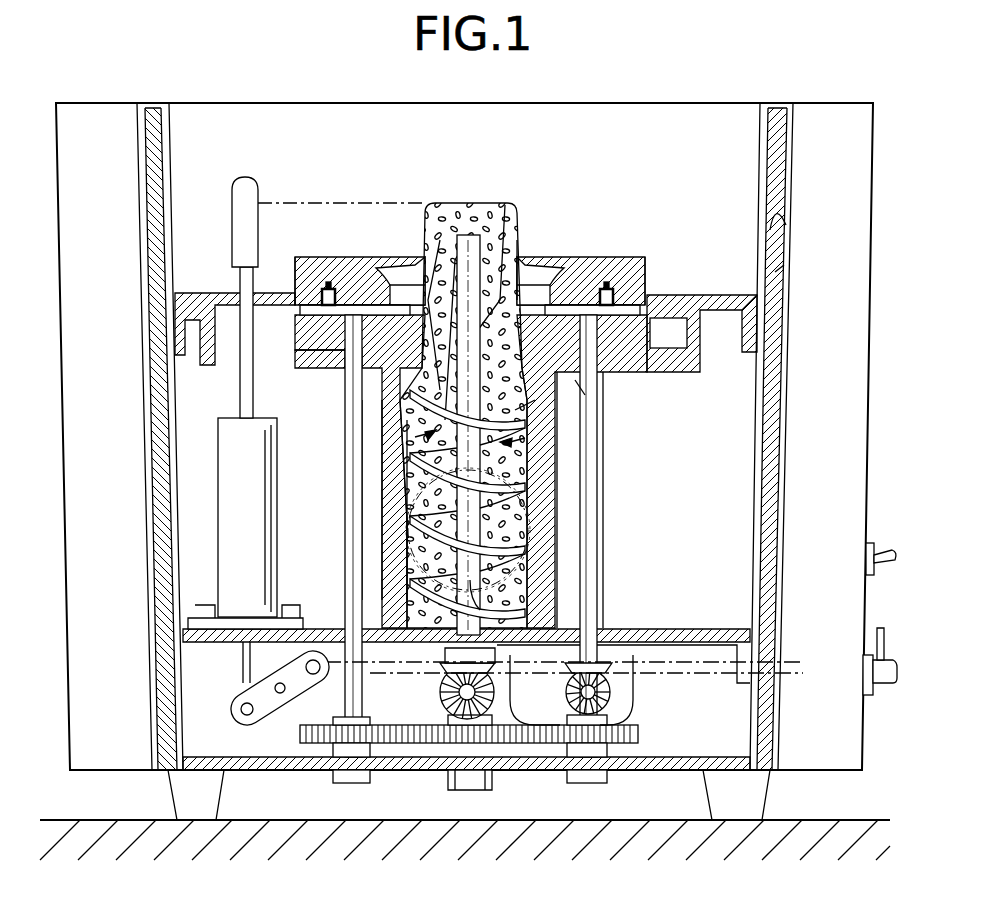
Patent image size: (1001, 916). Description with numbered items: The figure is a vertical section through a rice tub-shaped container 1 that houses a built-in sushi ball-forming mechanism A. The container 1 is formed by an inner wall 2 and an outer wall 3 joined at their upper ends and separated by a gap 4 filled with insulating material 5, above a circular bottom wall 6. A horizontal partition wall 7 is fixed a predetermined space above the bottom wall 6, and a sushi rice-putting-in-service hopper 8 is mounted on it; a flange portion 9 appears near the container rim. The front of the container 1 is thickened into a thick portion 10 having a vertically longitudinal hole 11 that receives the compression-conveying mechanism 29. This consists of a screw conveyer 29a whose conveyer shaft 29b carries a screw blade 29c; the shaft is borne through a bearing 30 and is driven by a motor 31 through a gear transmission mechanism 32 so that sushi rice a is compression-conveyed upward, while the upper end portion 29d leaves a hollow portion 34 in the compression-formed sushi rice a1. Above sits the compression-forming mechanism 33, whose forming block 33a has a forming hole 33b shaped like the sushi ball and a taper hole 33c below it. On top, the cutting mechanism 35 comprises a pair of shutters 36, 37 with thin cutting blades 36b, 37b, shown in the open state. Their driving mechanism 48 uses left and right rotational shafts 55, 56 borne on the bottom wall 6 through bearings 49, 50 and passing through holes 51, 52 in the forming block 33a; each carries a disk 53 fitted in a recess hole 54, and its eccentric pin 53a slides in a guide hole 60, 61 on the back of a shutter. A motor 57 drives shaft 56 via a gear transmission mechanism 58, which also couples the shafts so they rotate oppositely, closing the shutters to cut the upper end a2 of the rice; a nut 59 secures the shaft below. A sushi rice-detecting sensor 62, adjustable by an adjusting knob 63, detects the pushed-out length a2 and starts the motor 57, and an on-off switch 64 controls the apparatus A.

The rice tub-shaped container 1 is at (873, 148).
The inner wall 2 is at (760, 143).
The outer wall 3 is at (793, 165).
The gap 4 is at (786, 224).
The insulating material 5 is at (784, 266).
The bottom wall 6 is at (690, 770).
The horizontal partition wall 7 is at (695, 630).
The sushi rice-putting-in-service hopper 8 is at (703, 296).
The flange 9 is at (745, 302).
The thick portion 10 is at (382, 515).
The vertically longitudinal hole 11 is at (395, 540).
The compression-conveying mechanism 29 is at (415, 470).
The screw conveyer 29a is at (530, 440).
The conveyer shaft 29b is at (480, 578).
The screw blade 29c is at (415, 437).
The upper end portion of the conveyer shaft 29d is at (535, 410).
The bearing 30 is at (455, 662).
The motor 31 is at (530, 745).
The gear transmission mechanism 32 is at (433, 740).
The compression-forming mechanism 33 is at (345, 400).
The forming block 33a is at (228, 340).
The forming hole 33b is at (582, 300).
The taper hole 33c is at (580, 392).
The hollow portion 34 is at (457, 245).
The cutting mechanism 35 is at (338, 257).
The shutter 36 is at (366, 257).
The cutting blade 36b is at (400, 262).
The shutter 37 is at (632, 257).
The cutting blade 37b is at (530, 263).
The driving mechanism 48 is at (598, 473).
The bearing 49 is at (338, 783).
The bearing 50 is at (583, 783).
The hole 51 is at (332, 355).
The hole 52 is at (491, 471).
The disk 53 is at (352, 300).
The eccentric pin 53a is at (328, 289).
The recess hole 54 is at (300, 305).
The rotational shaft 55 is at (350, 500).
The rotational shaft 56 is at (590, 528).
The motor 57 is at (610, 690).
The gear transmission mechanism 58 is at (628, 629).
The nut 59 is at (530, 760).
The guide hole 60 is at (300, 262).
The guide hole 61 is at (650, 262).
The sushi rice-detecting sensor 62 is at (232, 190).
The adjusting knob 63 is at (890, 683).
The on-off switch 64 is at (883, 545).
The sushi ball-forming mechanism A is at (288, 188).
The sushi rice a is at (415, 600).
The compression-formed sushi rice a1 is at (514, 240).
The upper end of the compression-formed sushi rice a2 is at (490, 240).